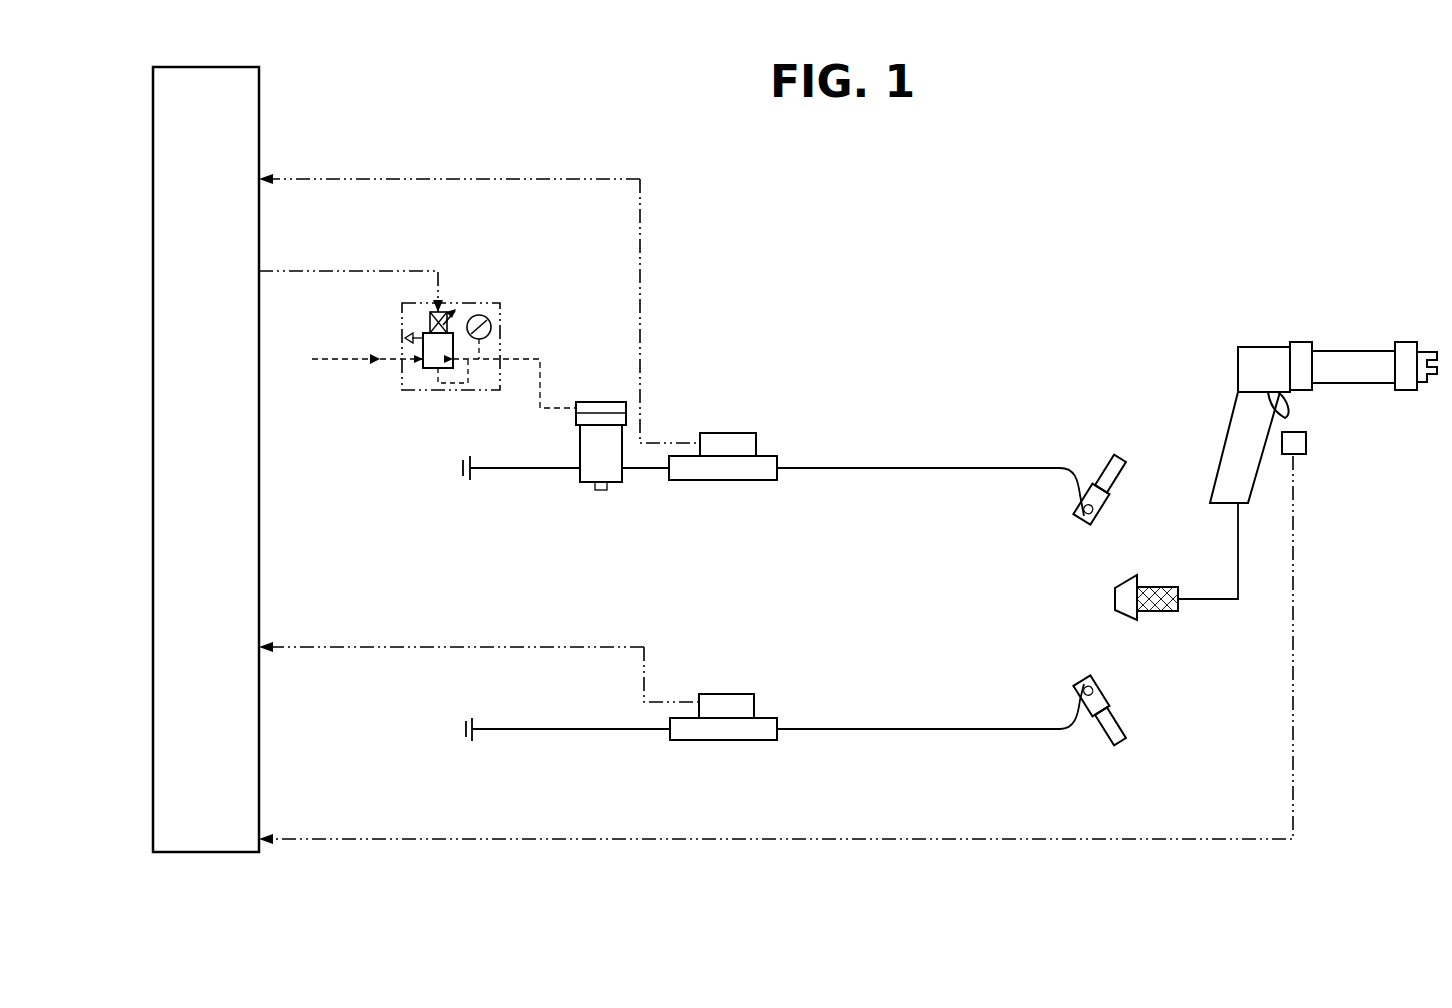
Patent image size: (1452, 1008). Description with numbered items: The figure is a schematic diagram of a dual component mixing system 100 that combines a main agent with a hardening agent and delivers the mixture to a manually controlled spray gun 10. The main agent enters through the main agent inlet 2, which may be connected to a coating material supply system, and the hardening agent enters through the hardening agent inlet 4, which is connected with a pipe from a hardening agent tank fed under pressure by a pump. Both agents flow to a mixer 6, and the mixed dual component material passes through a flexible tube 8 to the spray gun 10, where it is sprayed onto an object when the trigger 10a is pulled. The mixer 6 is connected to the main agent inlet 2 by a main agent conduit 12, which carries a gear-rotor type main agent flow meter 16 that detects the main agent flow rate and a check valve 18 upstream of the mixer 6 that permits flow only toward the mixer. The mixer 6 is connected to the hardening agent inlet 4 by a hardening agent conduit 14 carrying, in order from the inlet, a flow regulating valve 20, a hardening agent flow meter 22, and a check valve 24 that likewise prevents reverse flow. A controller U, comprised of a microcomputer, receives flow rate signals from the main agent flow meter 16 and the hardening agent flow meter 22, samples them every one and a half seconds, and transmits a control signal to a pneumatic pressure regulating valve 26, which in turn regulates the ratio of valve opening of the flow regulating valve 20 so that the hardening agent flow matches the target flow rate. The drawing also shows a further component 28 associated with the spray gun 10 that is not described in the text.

The controller U is at (245, 106).
The dual component mixing system 100 is at (780, 344).
The main agent inlet 2 is at (469, 743).
The hardening agent inlet 4 is at (466, 482).
The mixer 6 is at (1138, 618).
The flexible tube 8 is at (1238, 539).
The spray gun 10 is at (1353, 338).
The trigger 10a is at (1291, 408).
The main agent conduit 12 is at (1052, 737).
The hardening agent conduit 14 is at (1024, 466).
The main agent flow meter 16 is at (720, 741).
The check valve 18 is at (1105, 677).
The flow regulating valve 20 is at (610, 473).
The hardening agent flow meter 22 is at (745, 481).
The check valve 24 is at (1118, 540).
The pressure regulating valve 26 is at (448, 330).
The trigger sensor 28 is at (1300, 444).